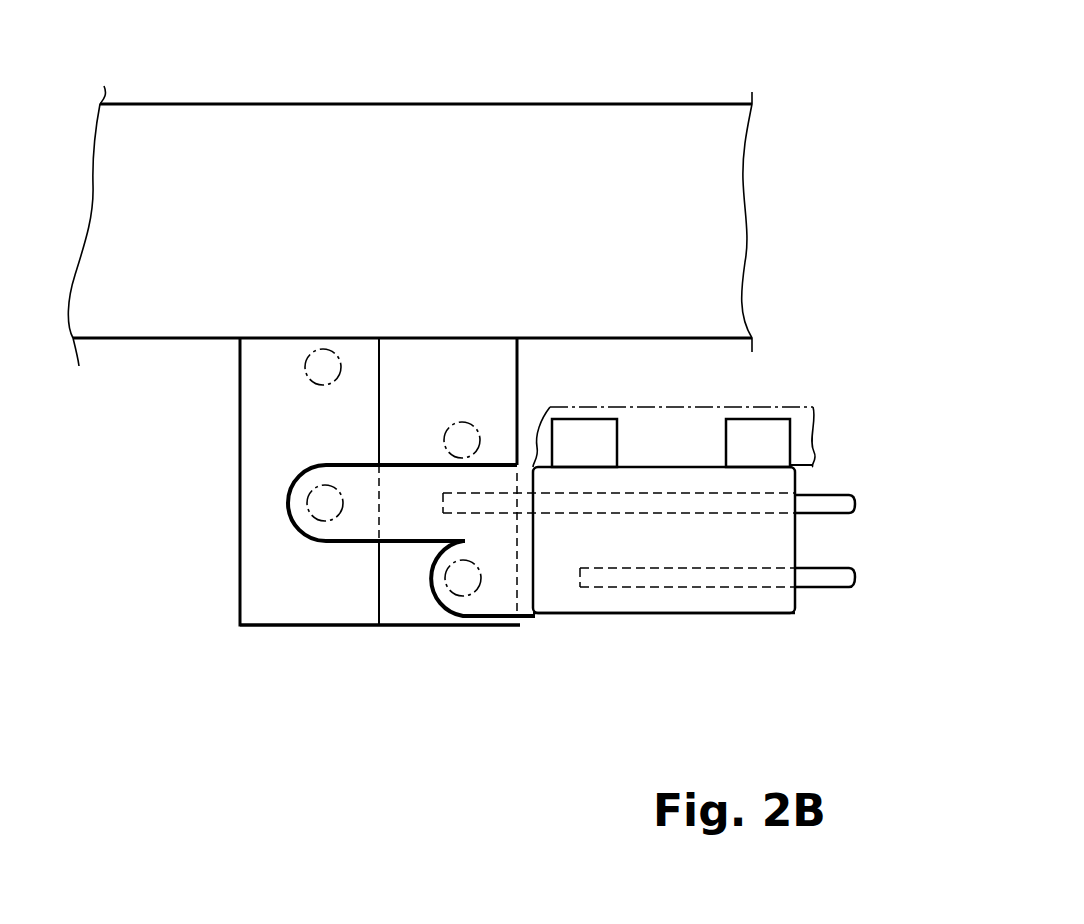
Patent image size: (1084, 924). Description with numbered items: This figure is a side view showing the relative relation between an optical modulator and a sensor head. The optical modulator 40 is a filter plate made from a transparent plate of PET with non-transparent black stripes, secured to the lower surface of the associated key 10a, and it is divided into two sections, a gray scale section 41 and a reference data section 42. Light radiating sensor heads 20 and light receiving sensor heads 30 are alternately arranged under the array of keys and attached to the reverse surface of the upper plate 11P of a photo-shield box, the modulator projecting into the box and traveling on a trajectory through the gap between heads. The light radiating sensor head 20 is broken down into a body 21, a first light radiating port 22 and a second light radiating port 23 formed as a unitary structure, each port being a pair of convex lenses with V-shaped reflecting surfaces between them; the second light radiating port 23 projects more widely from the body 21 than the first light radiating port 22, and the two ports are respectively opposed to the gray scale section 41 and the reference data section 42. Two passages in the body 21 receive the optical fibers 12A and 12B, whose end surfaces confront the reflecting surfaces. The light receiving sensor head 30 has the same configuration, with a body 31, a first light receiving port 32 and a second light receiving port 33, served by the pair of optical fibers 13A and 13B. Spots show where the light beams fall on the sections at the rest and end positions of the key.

The key 10a is at (571, 104).
The upper plate 11P is at (780, 407).
The optical fiber 12A is at (870, 606).
The optical fiber 13A is at (820, 588).
The optical fiber 12B is at (740, 439).
The optical fiber 13B is at (817, 490).
The light radiating sensor head 20 is at (737, 561).
The light receiving sensor head 30 is at (810, 539).
The body 21 is at (620, 574).
The body 31 is at (693, 617).
The first light radiating port 22 is at (402, 619).
The first light receiving port 32 is at (427, 580).
The second light radiating port 23 is at (309, 594).
The second light receiving port 33 is at (294, 522).
The optical modulator 40 is at (228, 448).
The gray scale section 41 is at (458, 626).
The reference data section 42 is at (253, 628).